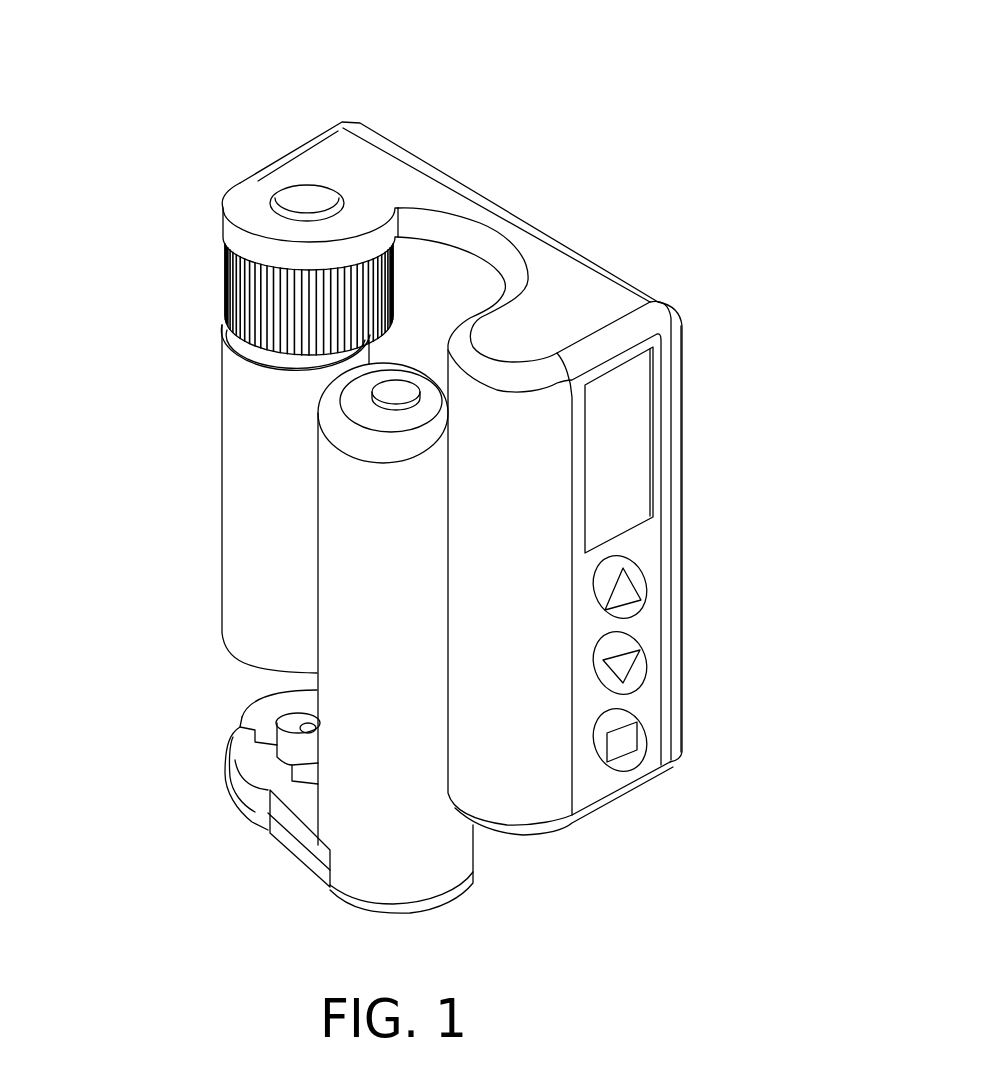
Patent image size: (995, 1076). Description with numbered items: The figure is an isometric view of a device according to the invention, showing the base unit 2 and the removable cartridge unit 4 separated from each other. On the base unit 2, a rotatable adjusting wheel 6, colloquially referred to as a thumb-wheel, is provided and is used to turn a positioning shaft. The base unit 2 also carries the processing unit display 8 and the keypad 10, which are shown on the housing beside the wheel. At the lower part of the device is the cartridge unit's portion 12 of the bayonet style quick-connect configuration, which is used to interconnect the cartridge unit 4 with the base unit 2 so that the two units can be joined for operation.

The base unit 2 is at (517, 185).
The removable cartridge unit 4 is at (273, 873).
The rotatable adjusting wheel 6 is at (227, 280).
The processing unit display 8 is at (630, 423).
The keypad 10 is at (693, 632).
The cartridge unit's portion of the bayonet style quick-connect configuration 12 is at (265, 693).